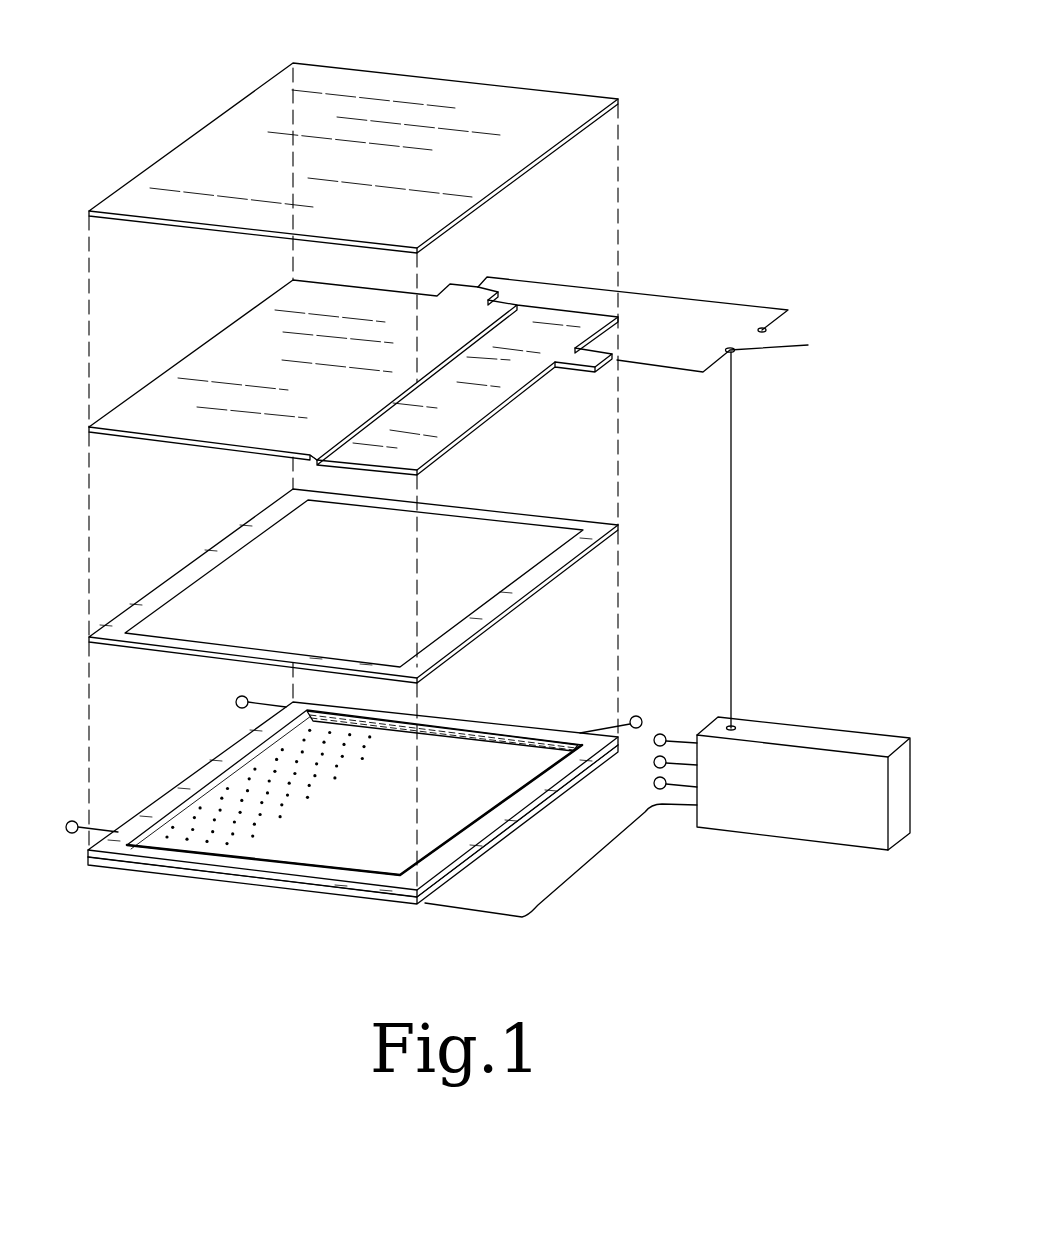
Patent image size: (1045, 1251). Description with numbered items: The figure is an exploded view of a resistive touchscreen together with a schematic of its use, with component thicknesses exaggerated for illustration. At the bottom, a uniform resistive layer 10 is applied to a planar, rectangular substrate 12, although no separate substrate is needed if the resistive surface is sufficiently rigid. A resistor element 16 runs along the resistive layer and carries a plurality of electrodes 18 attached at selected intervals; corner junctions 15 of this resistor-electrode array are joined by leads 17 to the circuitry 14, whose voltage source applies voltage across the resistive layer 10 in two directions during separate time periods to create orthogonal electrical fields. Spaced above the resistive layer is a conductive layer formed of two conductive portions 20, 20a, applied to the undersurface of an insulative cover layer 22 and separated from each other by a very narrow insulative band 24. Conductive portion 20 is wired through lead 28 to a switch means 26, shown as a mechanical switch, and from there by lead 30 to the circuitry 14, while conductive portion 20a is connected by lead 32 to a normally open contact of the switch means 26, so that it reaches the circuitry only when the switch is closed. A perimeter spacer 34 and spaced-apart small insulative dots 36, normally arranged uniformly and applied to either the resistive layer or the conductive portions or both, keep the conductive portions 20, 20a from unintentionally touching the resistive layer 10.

The resistive layer 10 is at (397, 830).
The substrate 12 is at (142, 870).
The circuitry 14 is at (790, 733).
The corner junctions 15 is at (382, 893).
The resistor element 16 is at (280, 870).
The leads 17 is at (573, 874).
The electrodes 18 is at (489, 733).
The conductive portion 20 is at (485, 404).
The conductive portion 20a is at (133, 433).
The insulative cover layer 22 is at (492, 84).
The insulative band 24 is at (333, 428).
The switch means 26 is at (750, 338).
The lead 28 is at (660, 367).
The lead 30 is at (732, 512).
The lead 32 is at (705, 300).
The perimeter spacer 34 is at (573, 577).
The dots 36 is at (262, 770).